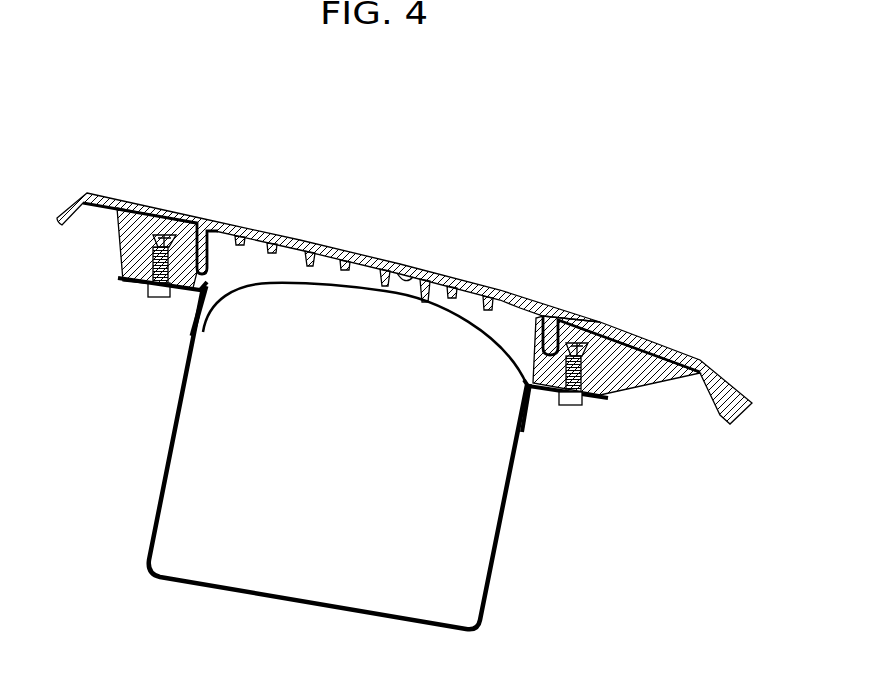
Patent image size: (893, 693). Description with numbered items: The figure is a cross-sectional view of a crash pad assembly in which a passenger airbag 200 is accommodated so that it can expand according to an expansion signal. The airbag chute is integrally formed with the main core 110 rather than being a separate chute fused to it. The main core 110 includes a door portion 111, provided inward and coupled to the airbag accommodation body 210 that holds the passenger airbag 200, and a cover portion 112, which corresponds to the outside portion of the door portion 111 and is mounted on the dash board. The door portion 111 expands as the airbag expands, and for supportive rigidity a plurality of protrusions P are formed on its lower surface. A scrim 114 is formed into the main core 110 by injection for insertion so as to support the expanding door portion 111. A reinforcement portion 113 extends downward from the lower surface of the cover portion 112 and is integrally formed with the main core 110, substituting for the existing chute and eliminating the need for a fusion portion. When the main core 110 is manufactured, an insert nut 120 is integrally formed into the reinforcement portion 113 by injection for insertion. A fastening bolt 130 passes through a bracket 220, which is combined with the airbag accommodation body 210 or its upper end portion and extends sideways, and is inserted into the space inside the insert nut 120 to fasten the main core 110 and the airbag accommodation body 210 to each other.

The main core 110 is at (149, 198).
The door portion 111 is at (208, 230).
The cover portion 112 is at (642, 342).
The reinforcement portion 113 is at (600, 373).
The scrim 114 is at (197, 212).
The insert nut 120 is at (570, 325).
The fastening bolt 130 is at (570, 405).
The passenger airbag 200 is at (360, 476).
The airbag accommodation body 210 is at (503, 530).
The bracket 220 is at (597, 400).
The protrusion P is at (304, 256).